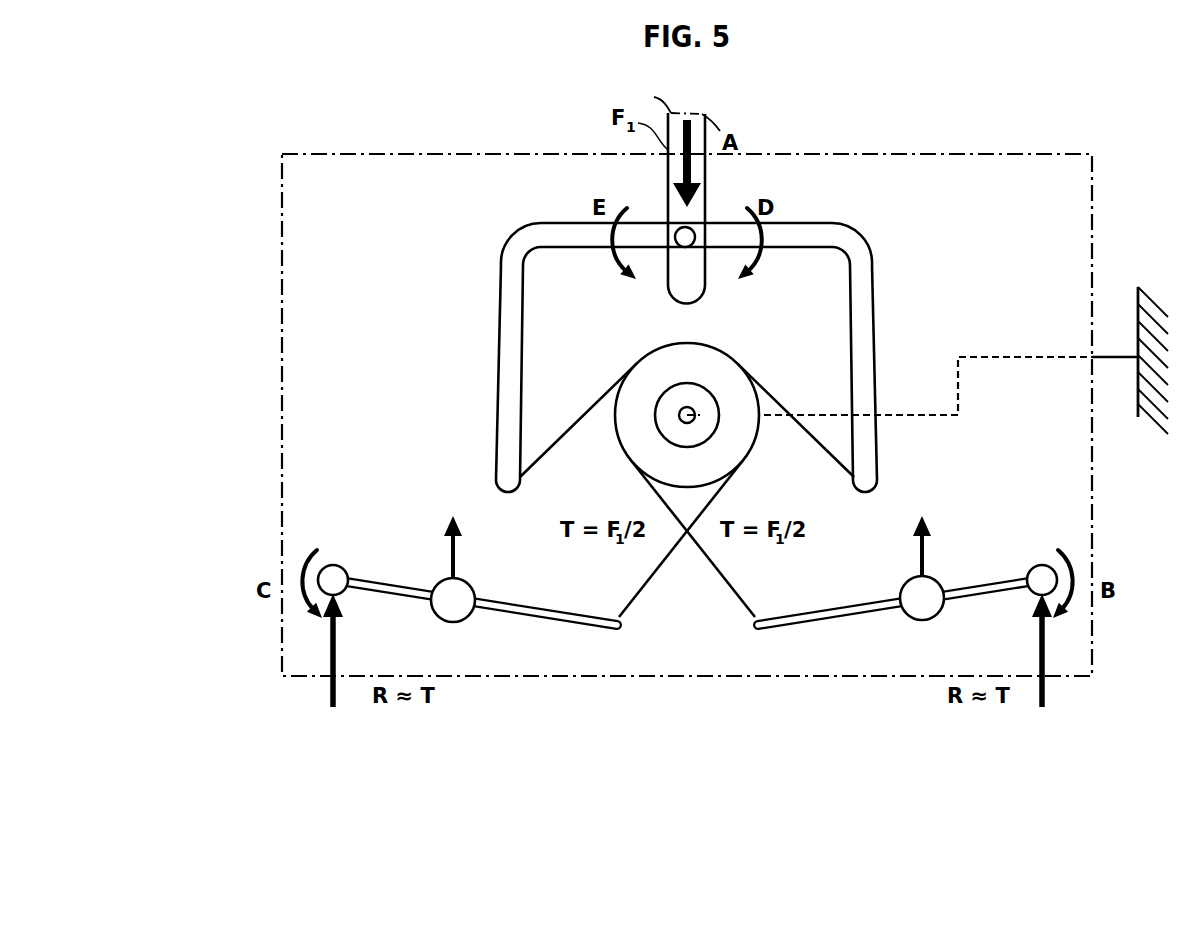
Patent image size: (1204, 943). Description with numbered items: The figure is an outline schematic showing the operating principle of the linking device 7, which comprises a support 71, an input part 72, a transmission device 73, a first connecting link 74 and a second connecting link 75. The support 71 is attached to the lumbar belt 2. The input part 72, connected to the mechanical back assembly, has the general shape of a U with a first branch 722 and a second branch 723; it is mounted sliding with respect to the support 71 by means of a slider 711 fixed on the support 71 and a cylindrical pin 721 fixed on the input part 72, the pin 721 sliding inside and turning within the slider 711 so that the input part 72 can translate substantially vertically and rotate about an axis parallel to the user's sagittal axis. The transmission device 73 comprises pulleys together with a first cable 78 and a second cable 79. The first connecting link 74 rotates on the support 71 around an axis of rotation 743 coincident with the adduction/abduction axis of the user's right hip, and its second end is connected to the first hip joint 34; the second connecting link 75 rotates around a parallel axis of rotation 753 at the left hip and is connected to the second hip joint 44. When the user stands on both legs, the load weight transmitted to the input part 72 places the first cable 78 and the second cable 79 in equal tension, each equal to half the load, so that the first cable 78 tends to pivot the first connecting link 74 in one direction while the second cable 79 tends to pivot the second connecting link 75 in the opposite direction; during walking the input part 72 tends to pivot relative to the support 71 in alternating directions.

The linking device 7 is at (207, 268).
The support 71 is at (1048, 198).
The lumbar belt 2 is at (1137, 313).
The input part 72 is at (878, 287).
The cylindrical pin 721 is at (688, 238).
The first branch 722 is at (868, 363).
The second branch 723 is at (505, 365).
The slider 711 is at (686, 292).
The transmission device 73 is at (724, 352).
The first connecting link 74 is at (848, 614).
The second connecting link 75 is at (527, 614).
The first cable 78 is at (729, 598).
The second cable 79 is at (646, 598).
The axis of rotation 743 is at (923, 603).
The axis of rotation 753 is at (449, 603).
The first hip joint 34 is at (1039, 576).
The second hip joint 44 is at (336, 576).